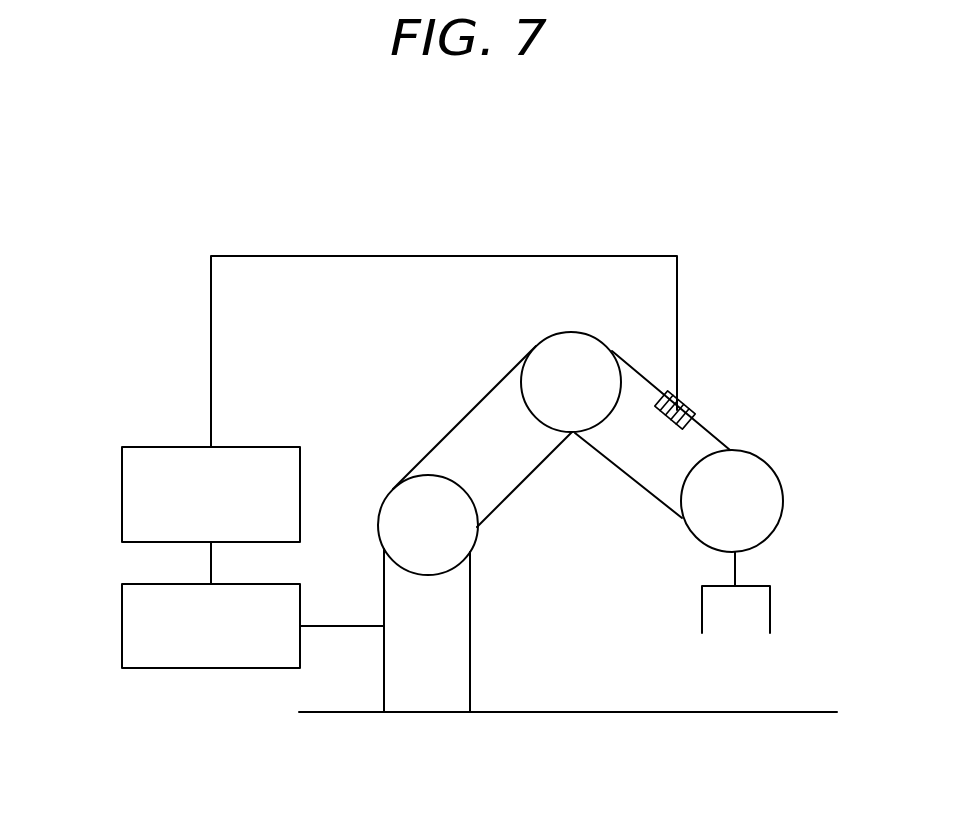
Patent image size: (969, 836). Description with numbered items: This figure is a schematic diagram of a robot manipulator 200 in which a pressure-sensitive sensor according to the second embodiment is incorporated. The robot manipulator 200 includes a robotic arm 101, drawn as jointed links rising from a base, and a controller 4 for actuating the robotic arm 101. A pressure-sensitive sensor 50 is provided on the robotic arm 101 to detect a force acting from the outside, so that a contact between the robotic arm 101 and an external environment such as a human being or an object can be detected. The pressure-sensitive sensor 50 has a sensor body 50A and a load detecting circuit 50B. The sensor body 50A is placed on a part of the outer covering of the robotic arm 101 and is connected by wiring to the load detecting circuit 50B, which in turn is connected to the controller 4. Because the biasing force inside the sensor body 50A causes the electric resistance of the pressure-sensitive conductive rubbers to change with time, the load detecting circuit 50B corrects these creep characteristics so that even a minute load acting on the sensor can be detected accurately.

The robot manipulator 200 is at (604, 158).
The robotic arm 101 is at (452, 442).
The pressure-sensitive sensor 50 is at (448, 245).
The sensor body 50A is at (688, 404).
The load detecting circuit 50B is at (122, 475).
The controller 4 is at (122, 612).